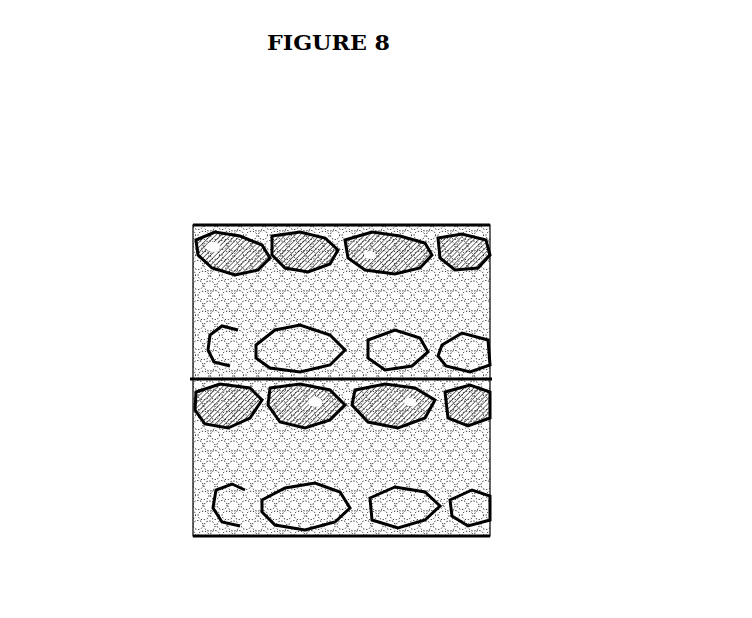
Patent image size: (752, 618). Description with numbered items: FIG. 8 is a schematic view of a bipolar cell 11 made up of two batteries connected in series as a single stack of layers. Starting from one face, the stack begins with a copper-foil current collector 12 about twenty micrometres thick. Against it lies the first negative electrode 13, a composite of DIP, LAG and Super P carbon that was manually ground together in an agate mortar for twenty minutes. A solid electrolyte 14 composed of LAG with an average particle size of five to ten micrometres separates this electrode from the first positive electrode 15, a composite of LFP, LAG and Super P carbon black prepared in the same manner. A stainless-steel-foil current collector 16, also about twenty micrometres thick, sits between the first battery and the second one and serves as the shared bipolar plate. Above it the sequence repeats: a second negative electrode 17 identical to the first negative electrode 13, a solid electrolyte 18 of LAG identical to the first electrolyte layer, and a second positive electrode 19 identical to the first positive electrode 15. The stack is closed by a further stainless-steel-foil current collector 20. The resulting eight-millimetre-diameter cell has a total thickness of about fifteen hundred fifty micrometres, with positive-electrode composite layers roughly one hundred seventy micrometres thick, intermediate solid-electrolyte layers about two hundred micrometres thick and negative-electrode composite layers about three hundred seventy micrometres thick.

The bipolar cell 11 is at (562, 206).
The current collector 12 is at (225, 227).
The first negative electrode 13 is at (490, 250).
The solid electrolyte 14 is at (212, 305).
The first positive electrode 15 is at (490, 348).
The current collector 16 is at (190, 380).
The second negative electrode 17 is at (490, 402).
The solid electrolyte 18 is at (273, 462).
The second positive electrode 19 is at (490, 505).
The current collector 20 is at (297, 538).